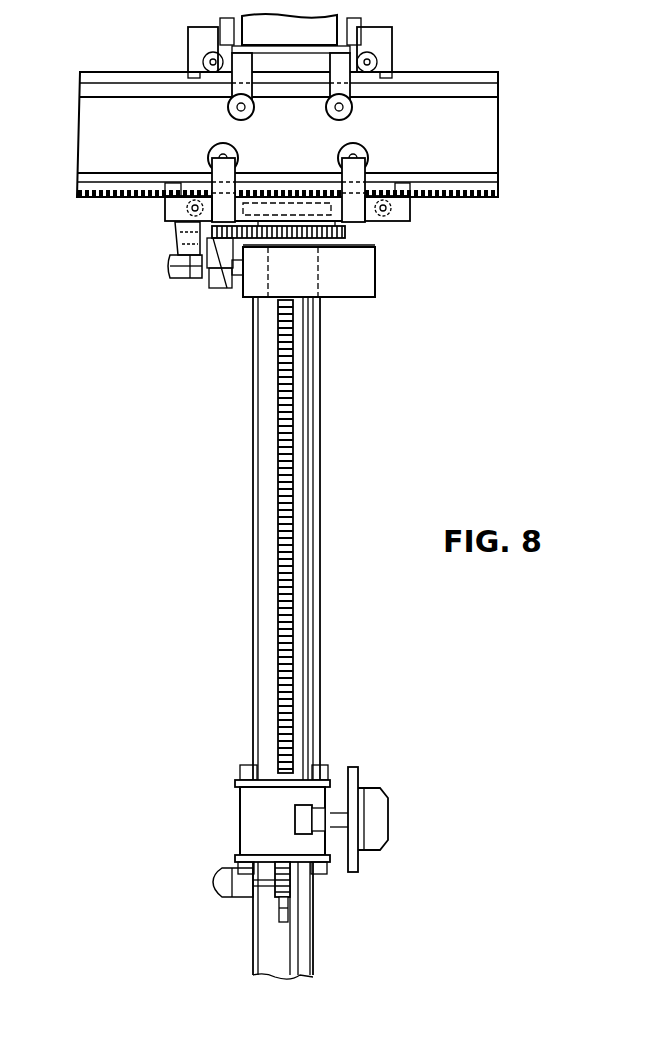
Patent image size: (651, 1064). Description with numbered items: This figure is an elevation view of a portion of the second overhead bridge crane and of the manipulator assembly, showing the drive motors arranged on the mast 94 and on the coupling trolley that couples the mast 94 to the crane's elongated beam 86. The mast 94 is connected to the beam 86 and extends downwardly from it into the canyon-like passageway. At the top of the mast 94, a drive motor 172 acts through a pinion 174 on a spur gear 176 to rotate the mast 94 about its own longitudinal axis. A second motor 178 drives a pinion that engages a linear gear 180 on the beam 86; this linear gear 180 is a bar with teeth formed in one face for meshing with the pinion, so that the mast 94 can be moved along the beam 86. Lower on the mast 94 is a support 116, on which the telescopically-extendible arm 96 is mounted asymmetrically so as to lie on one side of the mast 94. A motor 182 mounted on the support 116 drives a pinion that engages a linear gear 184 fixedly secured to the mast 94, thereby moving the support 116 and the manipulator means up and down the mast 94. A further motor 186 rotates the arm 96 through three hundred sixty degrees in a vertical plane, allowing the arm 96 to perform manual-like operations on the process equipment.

The beam 86 is at (497, 138).
The linear gear 180 is at (97, 193).
The spur gear 176 is at (340, 236).
The pinion 174 is at (178, 232).
The motor 178 is at (170, 265).
The drive motor 172 is at (212, 286).
The mast 94 is at (268, 485).
The linear gear 184 is at (280, 630).
The support 116 is at (256, 815).
The telescopically-extendible arm 96 is at (375, 820).
The motor 182 is at (215, 886).
The motor 186 is at (322, 875).